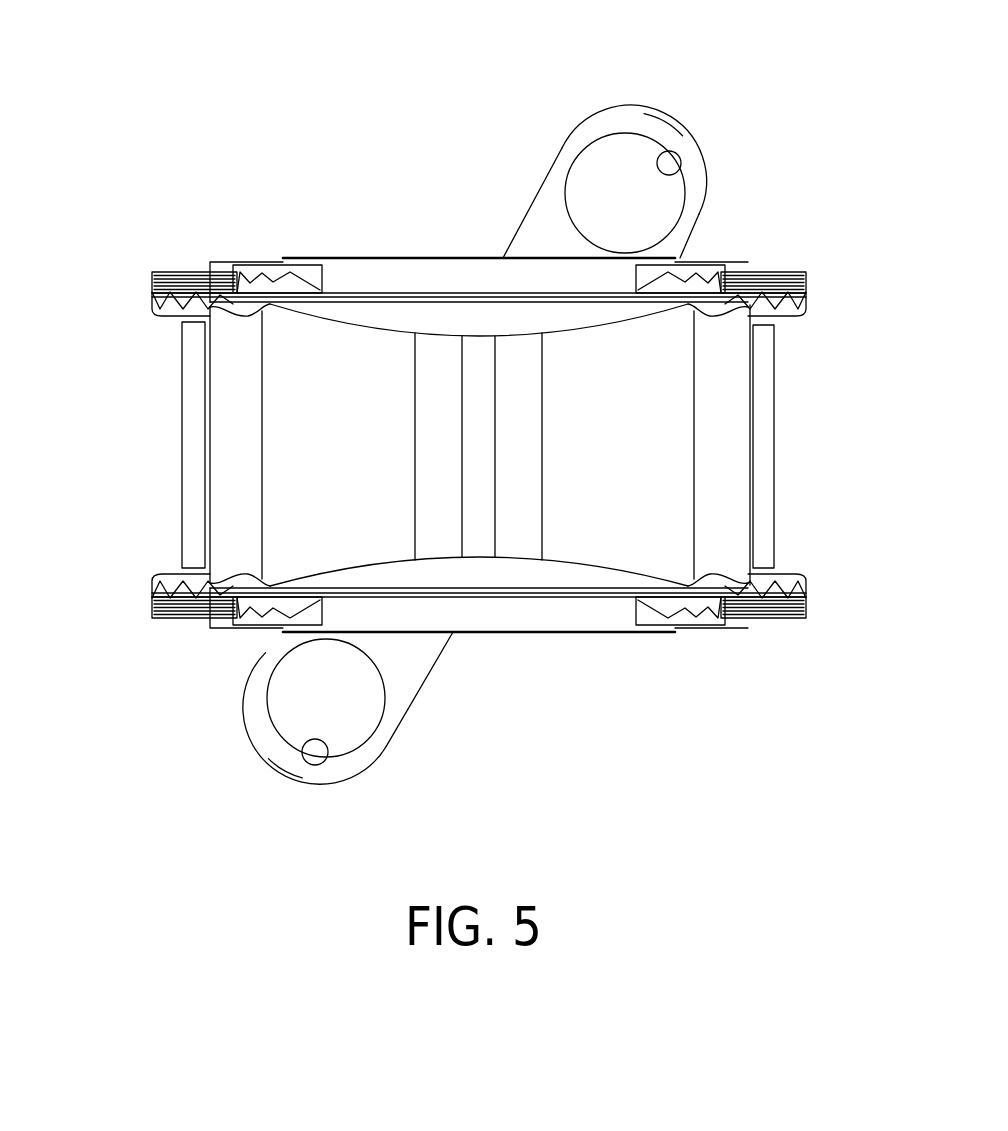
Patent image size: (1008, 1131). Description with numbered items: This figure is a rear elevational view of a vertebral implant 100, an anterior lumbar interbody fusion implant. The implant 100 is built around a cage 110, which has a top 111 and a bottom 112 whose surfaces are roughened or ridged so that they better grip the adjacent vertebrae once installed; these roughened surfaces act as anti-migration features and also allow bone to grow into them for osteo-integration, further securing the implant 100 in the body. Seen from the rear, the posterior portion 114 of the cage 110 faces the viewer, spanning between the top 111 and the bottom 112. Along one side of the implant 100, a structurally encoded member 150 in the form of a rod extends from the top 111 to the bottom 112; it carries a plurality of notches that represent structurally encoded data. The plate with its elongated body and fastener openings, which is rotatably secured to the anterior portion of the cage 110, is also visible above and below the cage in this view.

The vertebral implant 100 is at (328, 95).
The cage 110 is at (220, 260).
The top 111 is at (760, 264).
The bottom 112 is at (756, 620).
The posterior portion 114 is at (720, 482).
The structurally encoded member 150 is at (180, 457).